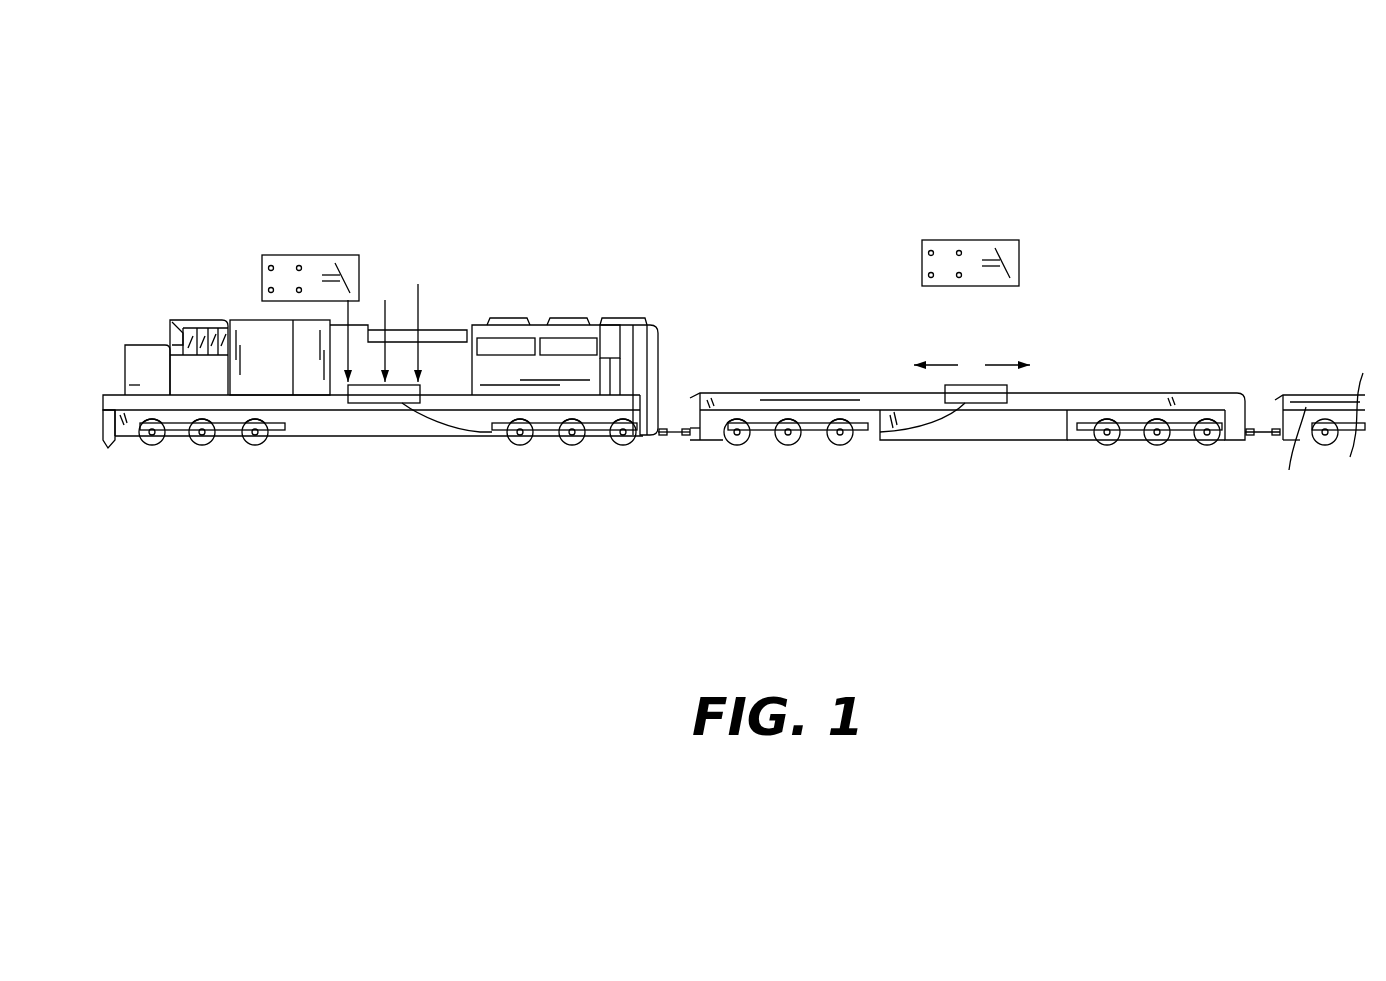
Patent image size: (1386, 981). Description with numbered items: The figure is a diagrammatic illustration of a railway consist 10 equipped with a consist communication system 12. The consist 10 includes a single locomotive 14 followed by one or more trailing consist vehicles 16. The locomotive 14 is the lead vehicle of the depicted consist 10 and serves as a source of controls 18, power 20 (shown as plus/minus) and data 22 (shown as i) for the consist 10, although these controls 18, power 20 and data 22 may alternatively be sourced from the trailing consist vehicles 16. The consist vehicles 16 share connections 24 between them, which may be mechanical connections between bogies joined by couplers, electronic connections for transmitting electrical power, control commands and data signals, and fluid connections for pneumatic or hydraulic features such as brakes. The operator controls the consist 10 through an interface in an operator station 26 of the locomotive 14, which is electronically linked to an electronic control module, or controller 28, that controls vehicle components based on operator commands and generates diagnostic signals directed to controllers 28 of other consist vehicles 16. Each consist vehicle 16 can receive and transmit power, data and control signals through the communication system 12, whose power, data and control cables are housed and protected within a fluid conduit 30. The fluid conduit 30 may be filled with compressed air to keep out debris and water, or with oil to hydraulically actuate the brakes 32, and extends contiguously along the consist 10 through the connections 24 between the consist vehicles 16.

The consist 10 is at (844, 128).
The consist communication system 12 is at (683, 442).
The locomotive 14 is at (542, 266).
The trailing consist vehicle 16 is at (1280, 346).
The controls 18 is at (278, 249).
The power 20 is at (378, 249).
The data 22 is at (429, 262).
The connection 24 is at (677, 396).
The operator station 26 is at (178, 314).
The electronic control module 28 is at (362, 403).
The fluid conduit 30 is at (548, 392).
The brakes 32 is at (768, 436).